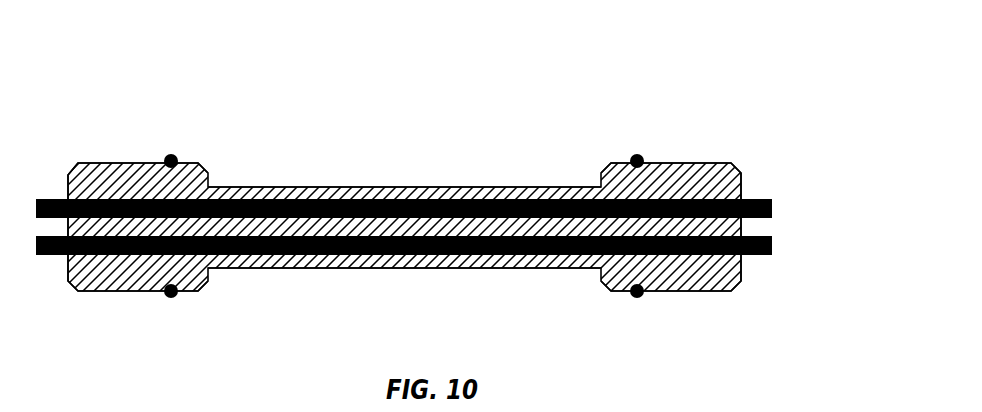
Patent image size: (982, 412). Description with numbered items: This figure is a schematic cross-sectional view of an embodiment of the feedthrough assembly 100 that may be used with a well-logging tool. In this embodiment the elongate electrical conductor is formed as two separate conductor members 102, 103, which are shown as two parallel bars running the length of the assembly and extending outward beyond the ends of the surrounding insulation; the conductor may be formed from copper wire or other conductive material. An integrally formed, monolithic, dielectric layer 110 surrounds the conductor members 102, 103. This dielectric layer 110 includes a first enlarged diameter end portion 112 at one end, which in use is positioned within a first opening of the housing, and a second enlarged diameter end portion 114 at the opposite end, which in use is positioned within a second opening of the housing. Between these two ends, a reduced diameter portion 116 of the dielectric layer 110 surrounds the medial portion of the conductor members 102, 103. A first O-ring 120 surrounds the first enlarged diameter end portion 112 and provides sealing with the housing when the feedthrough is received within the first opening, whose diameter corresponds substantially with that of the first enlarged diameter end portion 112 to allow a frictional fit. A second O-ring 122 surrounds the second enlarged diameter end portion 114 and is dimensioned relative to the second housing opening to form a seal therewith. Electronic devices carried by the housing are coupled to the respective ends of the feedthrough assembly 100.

The feedthrough assembly 100 is at (395, 154).
The elongate electrical conductor 102 is at (764, 200).
The second conductor member 103 is at (764, 238).
The integrally formed, monolithic, dielectric layer 110 is at (258, 164).
The first enlarged diameter end portion 112 is at (80, 160).
The second enlarged diameter end portion 114 is at (716, 160).
The reduced diameter portion 116 is at (227, 252).
The first O-ring 120 is at (165, 148).
The second O-ring 122 is at (631, 150).